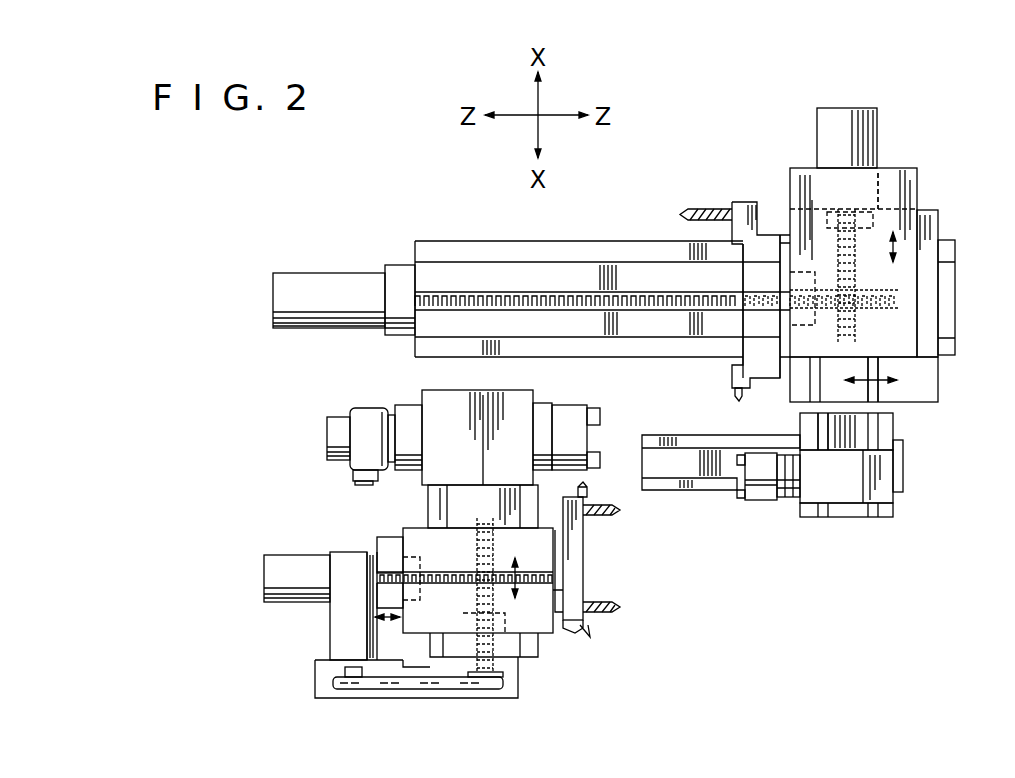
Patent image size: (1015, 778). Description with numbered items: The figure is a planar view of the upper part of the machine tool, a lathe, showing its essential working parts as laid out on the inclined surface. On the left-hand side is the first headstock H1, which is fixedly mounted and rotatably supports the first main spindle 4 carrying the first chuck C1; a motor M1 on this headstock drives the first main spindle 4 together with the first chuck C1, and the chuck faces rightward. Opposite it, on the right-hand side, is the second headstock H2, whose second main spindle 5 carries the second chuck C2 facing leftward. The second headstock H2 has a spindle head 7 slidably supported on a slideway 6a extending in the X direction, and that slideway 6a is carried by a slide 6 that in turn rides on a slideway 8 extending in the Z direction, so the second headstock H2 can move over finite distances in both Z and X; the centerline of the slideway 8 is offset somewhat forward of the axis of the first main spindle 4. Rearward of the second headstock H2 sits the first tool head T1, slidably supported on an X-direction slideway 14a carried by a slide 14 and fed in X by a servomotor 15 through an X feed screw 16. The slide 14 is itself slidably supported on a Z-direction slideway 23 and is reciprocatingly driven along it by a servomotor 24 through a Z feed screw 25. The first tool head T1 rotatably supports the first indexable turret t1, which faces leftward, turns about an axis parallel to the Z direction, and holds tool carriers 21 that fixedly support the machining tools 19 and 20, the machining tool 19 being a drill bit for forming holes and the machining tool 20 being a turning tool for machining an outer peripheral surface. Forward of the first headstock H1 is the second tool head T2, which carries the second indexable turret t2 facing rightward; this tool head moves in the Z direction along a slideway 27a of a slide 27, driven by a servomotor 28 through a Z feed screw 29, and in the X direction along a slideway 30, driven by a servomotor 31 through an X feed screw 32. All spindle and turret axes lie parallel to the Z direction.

The first main spindle 4 is at (557, 415).
The second main spindle 5 is at (786, 494).
The slide 6 is at (887, 424).
The slideway 6a is at (820, 433).
The spindle head 7 is at (887, 495).
The slideway 8 is at (681, 486).
The slide 14 is at (925, 376).
The slideway 14a is at (882, 392).
The servomotor 15 is at (853, 115).
The X feed screw 16 is at (857, 218).
The machining tool 19 is at (690, 209).
The machining tool 20 is at (736, 393).
The tool carrier 21 is at (745, 215).
The slideway 23 is at (555, 250).
The servomotor 24 is at (352, 283).
The Z feed screw 25 is at (528, 300).
The slide 27 is at (397, 558).
The slideway 27a is at (388, 548).
The servomotor 28 is at (270, 576).
The Z feed screw 29 is at (373, 562).
The slideway 30 is at (548, 640).
The servomotor 31 is at (332, 640).
The X feed screw 32 is at (477, 563).
The first chuck C1 is at (575, 440).
The second chuck C2 is at (758, 494).
The first headstock H1 is at (433, 405).
The second headstock H2 is at (845, 483).
The motor M1 is at (333, 432).
The first tool head T1 is at (905, 293).
The second tool head T2 is at (446, 624).
The first indexable turret t1 is at (745, 282).
The second indexable turret t2 is at (575, 558).